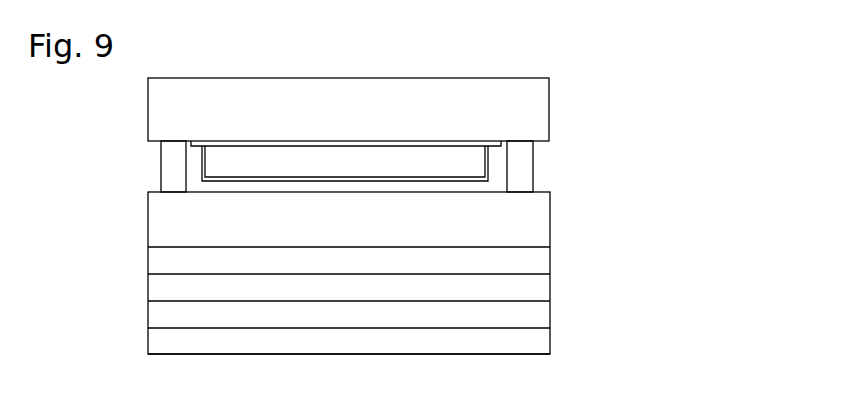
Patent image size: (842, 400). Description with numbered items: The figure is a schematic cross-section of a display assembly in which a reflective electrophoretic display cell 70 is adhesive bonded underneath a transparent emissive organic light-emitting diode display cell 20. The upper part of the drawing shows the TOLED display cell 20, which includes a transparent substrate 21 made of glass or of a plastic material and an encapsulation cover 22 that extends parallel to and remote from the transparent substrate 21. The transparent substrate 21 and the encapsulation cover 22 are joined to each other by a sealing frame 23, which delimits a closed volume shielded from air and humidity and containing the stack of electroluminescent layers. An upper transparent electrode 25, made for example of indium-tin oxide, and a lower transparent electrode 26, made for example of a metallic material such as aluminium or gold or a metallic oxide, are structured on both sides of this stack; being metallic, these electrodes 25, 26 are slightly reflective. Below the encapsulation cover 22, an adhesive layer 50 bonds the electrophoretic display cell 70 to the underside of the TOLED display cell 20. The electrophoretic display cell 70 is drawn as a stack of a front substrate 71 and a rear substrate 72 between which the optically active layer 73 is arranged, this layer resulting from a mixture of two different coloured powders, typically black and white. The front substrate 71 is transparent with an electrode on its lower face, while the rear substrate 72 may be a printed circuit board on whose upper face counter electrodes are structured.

The TOLED display cell 20 is at (612, 148).
The transparent substrate 21 is at (538, 107).
The encapsulation cover 22 is at (523, 229).
The sealing frame 23 is at (517, 177).
The upper transparent electrode 25 is at (478, 142).
The lower transparent electrode 26 is at (457, 178).
The adhesive layer 50 is at (168, 261).
The electrophoretic display cell 70 is at (613, 302).
The front substrate 71 is at (170, 287).
The rear substrate 72 is at (167, 339).
The optically active layer 73 is at (177, 315).